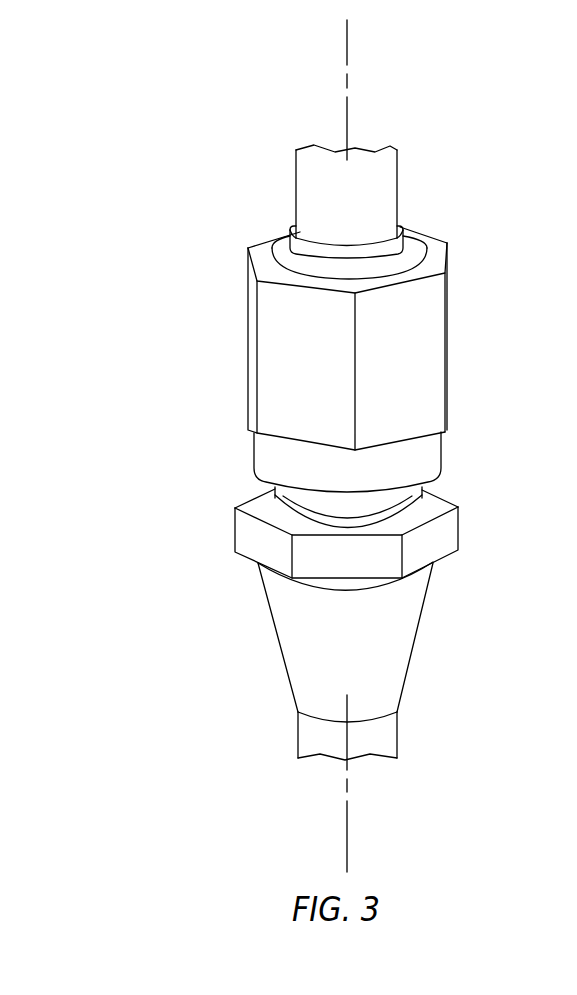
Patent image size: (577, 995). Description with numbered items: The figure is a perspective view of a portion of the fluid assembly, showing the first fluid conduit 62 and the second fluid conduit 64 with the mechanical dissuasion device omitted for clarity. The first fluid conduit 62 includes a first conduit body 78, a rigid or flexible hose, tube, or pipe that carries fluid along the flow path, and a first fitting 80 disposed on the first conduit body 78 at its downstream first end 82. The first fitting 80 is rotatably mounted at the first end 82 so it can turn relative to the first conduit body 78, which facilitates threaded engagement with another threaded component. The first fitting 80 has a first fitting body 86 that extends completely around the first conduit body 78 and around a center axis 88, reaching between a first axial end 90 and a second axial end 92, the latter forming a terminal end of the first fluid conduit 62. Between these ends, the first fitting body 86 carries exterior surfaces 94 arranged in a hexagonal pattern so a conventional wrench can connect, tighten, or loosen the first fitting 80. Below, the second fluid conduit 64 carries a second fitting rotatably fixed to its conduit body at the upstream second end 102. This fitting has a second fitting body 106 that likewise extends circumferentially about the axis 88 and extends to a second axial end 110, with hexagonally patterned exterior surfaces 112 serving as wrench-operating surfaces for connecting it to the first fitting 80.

The first fluid conduit 62 is at (425, 168).
The second fluid conduit 64 is at (445, 602).
The first conduit body 78 is at (385, 208).
The first fitting 80 is at (457, 375).
The first end 82 is at (218, 477).
The first fitting body 86 is at (432, 407).
The axis 88 is at (350, 30).
The first axial end 90 is at (262, 250).
The second axial end 92 is at (433, 478).
The exterior surfaces 94 is at (270, 323).
The second end 102 is at (215, 527).
The second fitting body 106 is at (440, 536).
The second axial end 110 is at (321, 720).
The exterior surfaces 112 is at (268, 545).